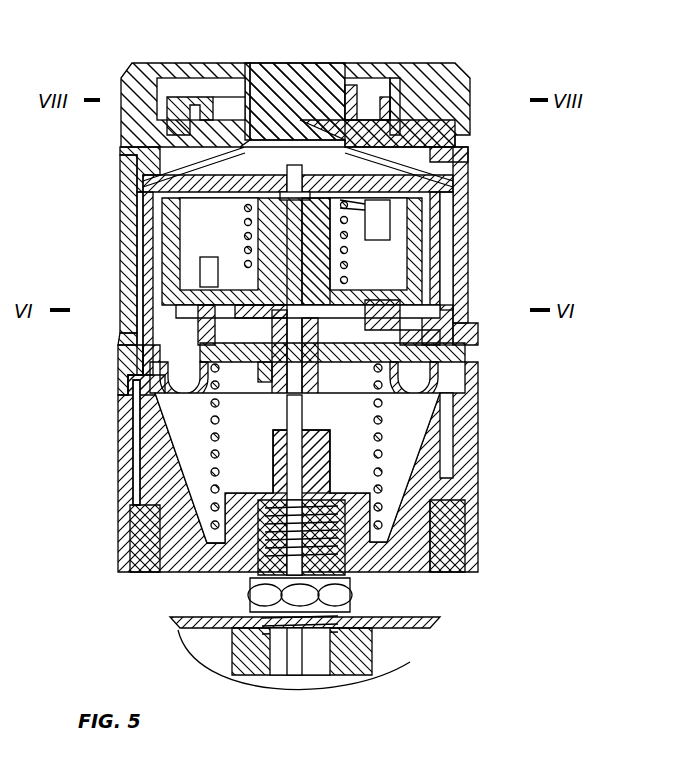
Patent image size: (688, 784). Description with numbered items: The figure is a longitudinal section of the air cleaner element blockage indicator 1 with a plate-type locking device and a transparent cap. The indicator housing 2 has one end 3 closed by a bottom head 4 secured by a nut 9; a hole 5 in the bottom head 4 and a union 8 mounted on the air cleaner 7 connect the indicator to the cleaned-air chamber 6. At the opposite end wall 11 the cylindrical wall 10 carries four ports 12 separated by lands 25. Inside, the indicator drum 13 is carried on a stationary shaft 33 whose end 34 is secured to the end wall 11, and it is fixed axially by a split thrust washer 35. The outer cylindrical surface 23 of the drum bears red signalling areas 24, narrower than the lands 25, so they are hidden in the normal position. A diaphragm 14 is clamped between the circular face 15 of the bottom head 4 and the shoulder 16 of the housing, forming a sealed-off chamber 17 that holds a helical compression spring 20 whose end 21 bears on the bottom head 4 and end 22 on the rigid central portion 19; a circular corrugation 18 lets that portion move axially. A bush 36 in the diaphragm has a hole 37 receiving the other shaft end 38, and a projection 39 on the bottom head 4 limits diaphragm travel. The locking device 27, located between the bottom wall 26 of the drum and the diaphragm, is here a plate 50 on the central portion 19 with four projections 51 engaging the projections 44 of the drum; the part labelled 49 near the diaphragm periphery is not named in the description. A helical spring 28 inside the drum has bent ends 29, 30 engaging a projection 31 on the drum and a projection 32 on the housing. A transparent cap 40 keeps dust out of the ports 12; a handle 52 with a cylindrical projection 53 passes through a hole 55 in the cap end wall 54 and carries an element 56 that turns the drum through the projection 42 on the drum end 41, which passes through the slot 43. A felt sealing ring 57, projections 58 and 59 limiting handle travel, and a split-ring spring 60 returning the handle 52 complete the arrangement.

The air cleaner element blockage indicator 1 is at (126, 58).
The cylindrical housing 2 is at (465, 493).
The end of the indicator housing 3 is at (470, 574).
The bottom head 4 is at (455, 482).
The hole 5 is at (318, 482).
The cleaned-air chamber 6 is at (395, 664).
The air cleaner 7 is at (420, 627).
The union 8 is at (256, 592).
The nut 9 is at (440, 572).
The cylindrical wall 10 is at (470, 170).
The end wall 11 is at (178, 182).
The ports 12 is at (440, 225).
The indicator drum 13 is at (418, 270).
The diaphragm 14 is at (380, 378).
The circular face 15 is at (135, 402).
The shoulder 16 is at (145, 353).
The sealed-off chamber 17 is at (170, 470).
The circular corrugation 18 is at (176, 392).
The rigid central portion 19 is at (226, 474).
The helical compression spring 20 is at (212, 484).
The end of the spring 21 is at (196, 572).
The end of the spring 22 is at (405, 398).
The outer cylindrical surface 23 is at (138, 278).
The signalling areas 24 is at (150, 268).
The lands 25 is at (132, 240).
The bottom wall 26 is at (440, 316).
The locking device 27 is at (125, 340).
The helical spring 28 is at (245, 256).
The end of the spring 29 is at (410, 300).
The end of the spring 30 is at (192, 330).
The projection 31 is at (188, 284).
The projection 32 is at (372, 236).
The stationary shaft 33 is at (246, 248).
The end of the shaft 34 is at (290, 176).
The split thrust washer 35 is at (300, 313).
The bush 36 is at (318, 388).
The hole 37 is at (283, 392).
The end of the shaft 38 is at (262, 366).
The projection 39 is at (278, 462).
The transparent cap 40 is at (466, 200).
The end of the indicator drum 41 is at (140, 196).
The projection 42 is at (464, 156).
The slot 43 is at (400, 128).
The projections 44 is at (397, 317).
The lower flange 49 is at (152, 380).
The plate 50 is at (400, 340).
The projections 51 is at (200, 325).
The handle 52 is at (466, 62).
The cylindrical projection 53 is at (300, 118).
The end wall 54 is at (360, 98).
The hole 55 is at (255, 92).
The element 56 is at (382, 152).
The felt sealing ring 57 is at (452, 122).
The projection 58 is at (436, 84).
The projection 59 is at (180, 108).
The spring 60 is at (382, 112).